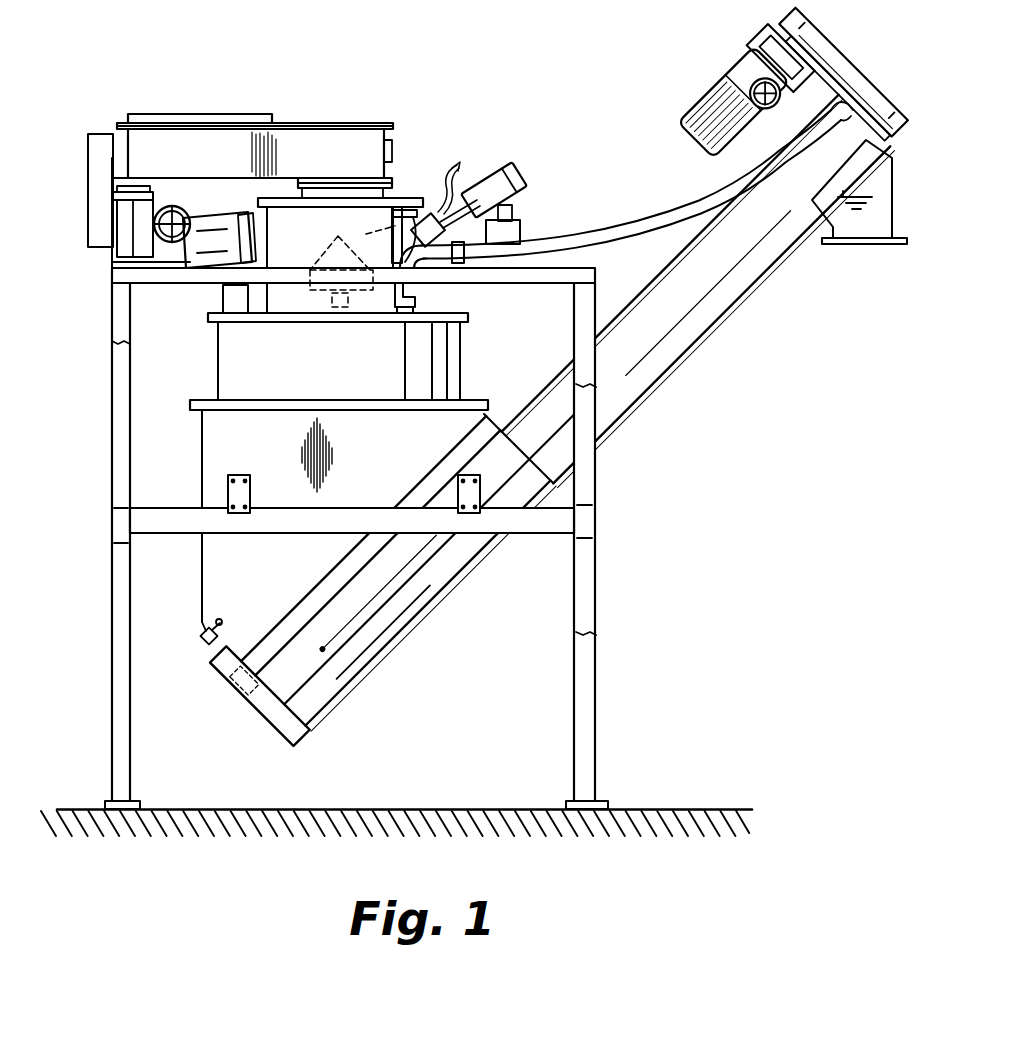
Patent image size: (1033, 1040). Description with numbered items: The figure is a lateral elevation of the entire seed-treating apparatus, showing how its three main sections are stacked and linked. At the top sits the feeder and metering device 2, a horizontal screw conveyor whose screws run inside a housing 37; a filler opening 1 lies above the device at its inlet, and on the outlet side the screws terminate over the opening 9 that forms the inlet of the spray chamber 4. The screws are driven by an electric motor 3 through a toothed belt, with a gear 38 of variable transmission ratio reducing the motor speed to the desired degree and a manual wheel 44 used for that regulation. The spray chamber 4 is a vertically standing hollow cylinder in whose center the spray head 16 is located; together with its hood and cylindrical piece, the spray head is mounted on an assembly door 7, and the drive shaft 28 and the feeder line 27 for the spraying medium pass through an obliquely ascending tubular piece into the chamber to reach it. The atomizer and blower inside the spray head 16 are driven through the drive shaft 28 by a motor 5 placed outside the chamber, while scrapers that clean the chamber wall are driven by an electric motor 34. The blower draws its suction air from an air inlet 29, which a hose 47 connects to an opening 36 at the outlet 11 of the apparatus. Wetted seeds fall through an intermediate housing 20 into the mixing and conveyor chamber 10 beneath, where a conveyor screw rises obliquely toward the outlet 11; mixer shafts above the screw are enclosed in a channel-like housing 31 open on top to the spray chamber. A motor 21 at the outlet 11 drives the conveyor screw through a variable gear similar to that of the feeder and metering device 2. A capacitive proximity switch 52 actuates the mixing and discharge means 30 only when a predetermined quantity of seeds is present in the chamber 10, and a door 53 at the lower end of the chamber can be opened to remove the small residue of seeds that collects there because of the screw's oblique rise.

The filler opening 1 is at (190, 113).
The feeder and metering device 2 is at (338, 110).
The housing 37 is at (356, 130).
The manual wheel 44 is at (177, 206).
The electric motor 3 is at (226, 212).
The gear 38 is at (150, 262).
The opening 9 is at (347, 198).
The spray head 16 is at (322, 256).
The air inlet 29 is at (395, 282).
The assembly door 7 is at (415, 289).
The electric motor 34 is at (223, 294).
The spray chamber 4 is at (285, 305).
The intermediate housing 20 is at (225, 360).
The mixing and conveyor chamber 10 is at (208, 452).
The feeder line 27 is at (455, 165).
The drive shaft 28 is at (440, 213).
The motor 5 is at (497, 185).
The hose 47 is at (638, 226).
The motor 21 is at (713, 107).
The opening 36 is at (842, 98).
The outlet 11 is at (853, 244).
The channel-like housing 31 is at (657, 368).
The mixing and discharge means 30 is at (407, 635).
The capacitive proximity switch 52 is at (203, 637).
The door 53 is at (243, 675).